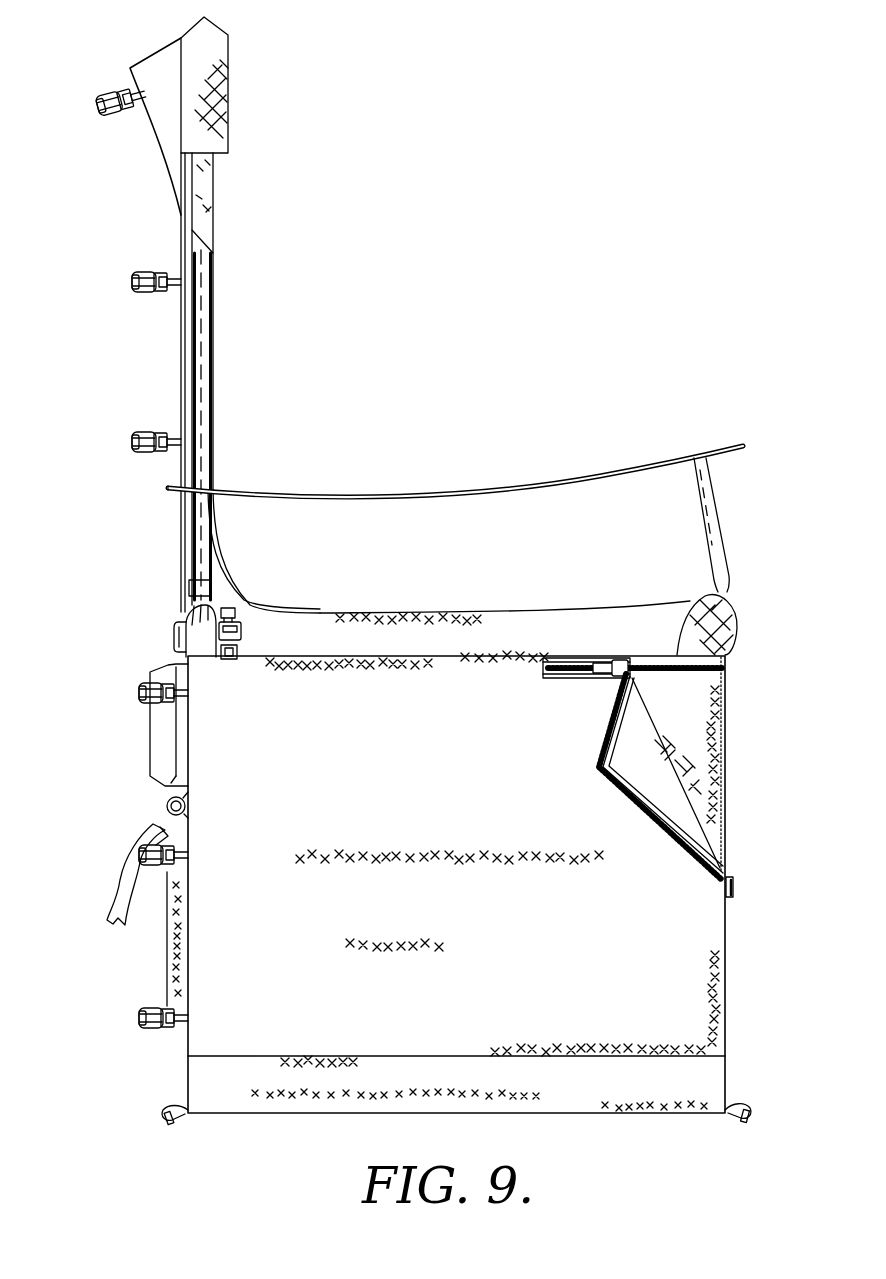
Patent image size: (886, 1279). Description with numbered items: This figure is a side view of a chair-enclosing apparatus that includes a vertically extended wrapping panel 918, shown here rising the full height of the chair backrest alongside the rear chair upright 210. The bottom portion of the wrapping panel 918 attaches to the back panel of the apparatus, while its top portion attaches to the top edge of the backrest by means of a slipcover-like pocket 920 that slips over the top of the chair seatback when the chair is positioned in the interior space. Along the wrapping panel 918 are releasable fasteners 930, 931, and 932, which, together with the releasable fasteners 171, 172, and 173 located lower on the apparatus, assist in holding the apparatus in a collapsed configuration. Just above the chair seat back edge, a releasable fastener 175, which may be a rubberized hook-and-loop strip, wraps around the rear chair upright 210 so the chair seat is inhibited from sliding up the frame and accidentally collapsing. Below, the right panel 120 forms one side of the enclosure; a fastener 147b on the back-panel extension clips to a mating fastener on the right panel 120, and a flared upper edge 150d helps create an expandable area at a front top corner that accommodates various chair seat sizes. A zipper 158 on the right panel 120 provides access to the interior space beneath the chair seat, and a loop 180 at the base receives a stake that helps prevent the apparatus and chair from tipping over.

The releasable fastener 932 is at (97, 99).
The vertically extended wrapping panel 918 is at (167, 123).
The slipcover-like pocket 920 is at (218, 137).
The releasable fastener 931 is at (140, 275).
The releasable fastener 930 is at (135, 428).
The rear chair upright 210 is at (197, 522).
The releasable fastener 175 is at (190, 588).
The fastener 147b is at (254, 634).
The flared upper edge 150d is at (729, 628).
The zipper 158 is at (597, 684).
The releasable fastener 171 is at (140, 695).
The releasable fastener 172 is at (140, 858).
The releasable fastener 173 is at (140, 1015).
The right panel 120 is at (707, 947).
The loop 180 is at (752, 1094).